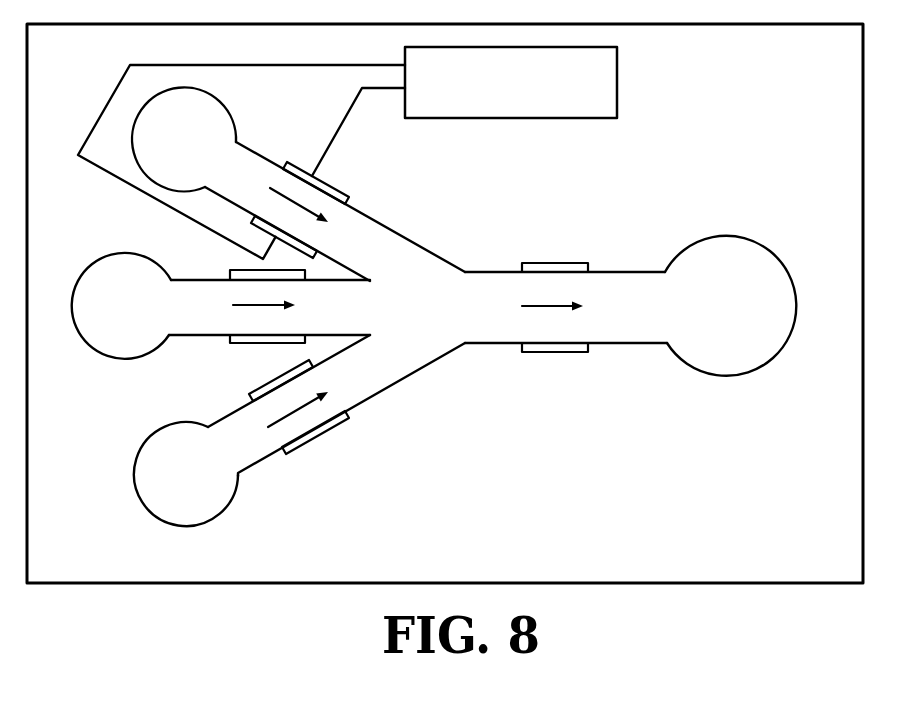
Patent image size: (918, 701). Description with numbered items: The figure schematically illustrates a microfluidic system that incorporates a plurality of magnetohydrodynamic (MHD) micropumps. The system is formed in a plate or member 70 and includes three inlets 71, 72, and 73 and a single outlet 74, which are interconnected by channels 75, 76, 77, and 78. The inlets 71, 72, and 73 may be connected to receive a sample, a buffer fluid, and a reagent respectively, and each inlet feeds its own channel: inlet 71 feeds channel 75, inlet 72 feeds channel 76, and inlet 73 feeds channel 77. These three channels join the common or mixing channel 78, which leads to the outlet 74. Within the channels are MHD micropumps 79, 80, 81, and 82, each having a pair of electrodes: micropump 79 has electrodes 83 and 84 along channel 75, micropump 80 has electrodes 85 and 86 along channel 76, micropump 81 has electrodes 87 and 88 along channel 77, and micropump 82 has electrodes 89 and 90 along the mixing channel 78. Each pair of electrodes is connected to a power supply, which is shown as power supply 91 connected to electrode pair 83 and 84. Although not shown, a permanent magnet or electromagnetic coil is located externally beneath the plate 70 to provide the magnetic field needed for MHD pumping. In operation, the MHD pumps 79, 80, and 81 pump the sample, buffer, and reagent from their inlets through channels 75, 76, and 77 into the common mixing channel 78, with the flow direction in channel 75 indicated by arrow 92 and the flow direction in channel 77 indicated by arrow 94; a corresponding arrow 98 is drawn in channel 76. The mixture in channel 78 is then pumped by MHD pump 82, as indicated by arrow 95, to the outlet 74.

The plate or member 70 is at (820, 104).
The inlet 71 is at (203, 152).
The inlet 72 is at (145, 327).
The inlet 73 is at (205, 497).
The outlet 74 is at (750, 321).
The channel 75 is at (237, 143).
The channel 76 is at (187, 279).
The channel 77 is at (253, 463).
The common or mixing channel 78 is at (493, 344).
The MHD micropump 79 is at (347, 183).
The MHD micropump 80 is at (217, 293).
The MHD micropump 81 is at (308, 430).
The MHD micropump 82 is at (584, 324).
The electrode 83 is at (292, 164).
The electrode 84 is at (336, 256).
The electrode 85 is at (243, 270).
The electrode 86 is at (267, 343).
The electrode 87 is at (253, 393).
The electrode 88 is at (312, 449).
The electrode 89 is at (543, 263).
The electrode 90 is at (532, 353).
The power supply 91 is at (618, 90).
The arrow 92 is at (303, 203).
The arrow 94 is at (312, 410).
The arrow 95 is at (560, 300).
The flow direction arrow 98 is at (233, 308).